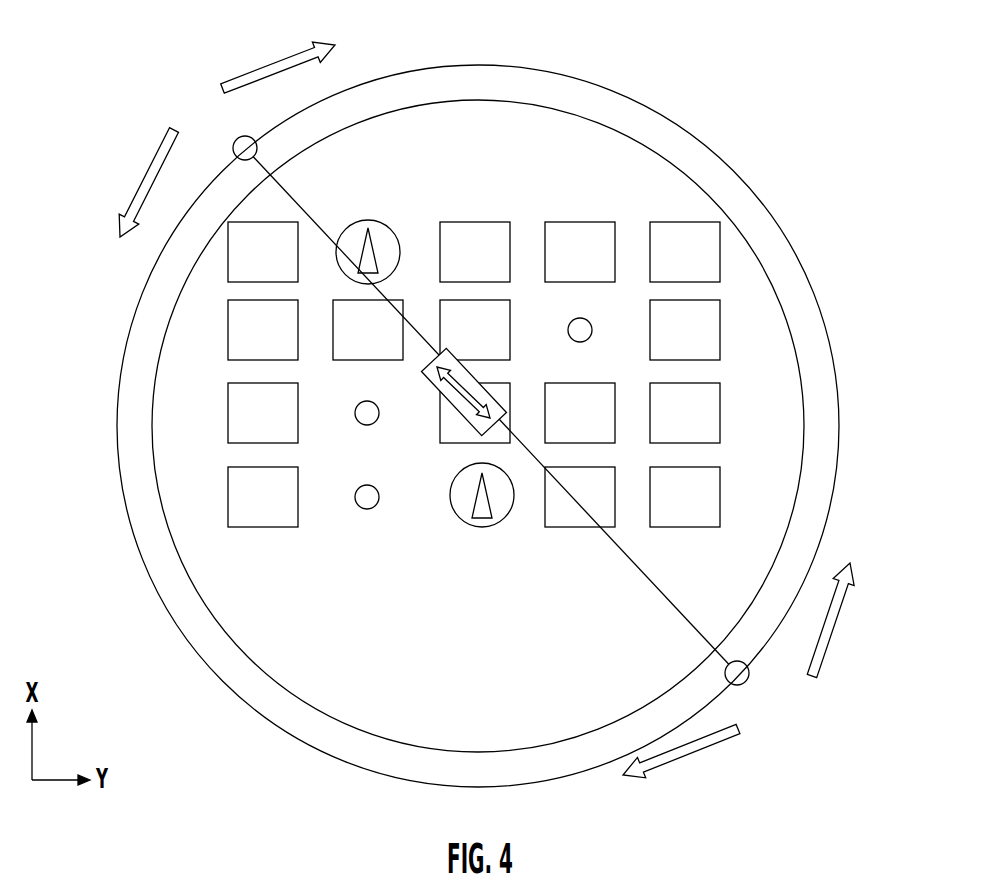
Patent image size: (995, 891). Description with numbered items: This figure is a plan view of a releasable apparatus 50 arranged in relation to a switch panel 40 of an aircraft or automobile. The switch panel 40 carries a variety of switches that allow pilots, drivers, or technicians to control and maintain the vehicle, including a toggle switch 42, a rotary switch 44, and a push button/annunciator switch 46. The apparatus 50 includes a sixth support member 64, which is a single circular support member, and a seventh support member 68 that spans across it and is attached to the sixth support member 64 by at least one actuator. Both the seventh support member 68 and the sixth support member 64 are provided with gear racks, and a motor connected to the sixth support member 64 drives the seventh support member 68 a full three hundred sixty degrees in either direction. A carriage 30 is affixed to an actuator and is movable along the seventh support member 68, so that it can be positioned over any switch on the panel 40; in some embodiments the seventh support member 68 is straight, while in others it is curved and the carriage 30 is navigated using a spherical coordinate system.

The carriage 30 is at (427, 383).
The switch panel 40 is at (178, 292).
The toggle switch 42 is at (362, 506).
The rotary switch 44 is at (460, 522).
The push button/annunciator switch 46 is at (547, 527).
The releasable apparatus 50 is at (866, 320).
The sixth support member 64 is at (762, 203).
The seventh support member 68 is at (628, 563).